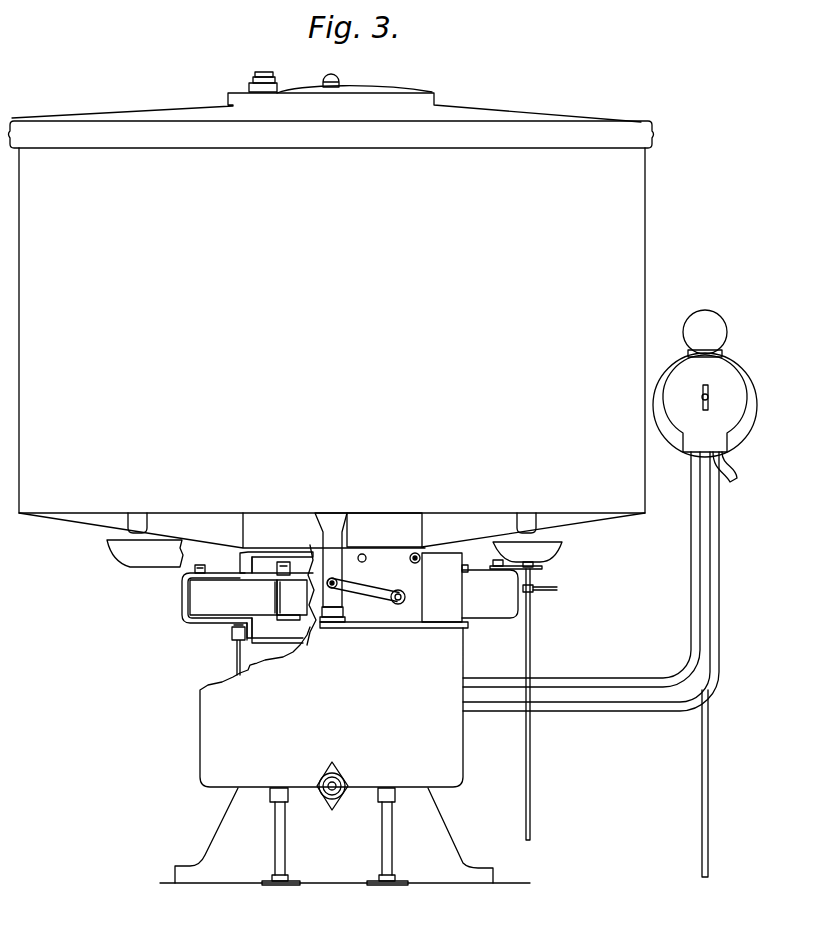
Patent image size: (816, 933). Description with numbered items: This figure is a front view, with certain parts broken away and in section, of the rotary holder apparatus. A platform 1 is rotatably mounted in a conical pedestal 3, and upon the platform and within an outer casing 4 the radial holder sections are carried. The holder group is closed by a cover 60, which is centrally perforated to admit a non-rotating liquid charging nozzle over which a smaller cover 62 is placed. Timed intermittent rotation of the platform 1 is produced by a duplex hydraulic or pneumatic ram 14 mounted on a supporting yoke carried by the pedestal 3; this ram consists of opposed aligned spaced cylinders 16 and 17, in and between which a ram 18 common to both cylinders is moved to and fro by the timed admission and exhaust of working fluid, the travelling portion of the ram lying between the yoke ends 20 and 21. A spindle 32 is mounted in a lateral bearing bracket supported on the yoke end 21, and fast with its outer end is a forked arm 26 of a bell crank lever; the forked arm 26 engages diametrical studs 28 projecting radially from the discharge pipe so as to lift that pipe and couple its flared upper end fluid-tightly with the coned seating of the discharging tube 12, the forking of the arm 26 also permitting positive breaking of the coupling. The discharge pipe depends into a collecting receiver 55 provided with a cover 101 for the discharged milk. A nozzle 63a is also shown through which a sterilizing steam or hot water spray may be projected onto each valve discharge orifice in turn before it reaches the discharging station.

The platform 1 is at (445, 532).
The conical pedestal 3 is at (450, 826).
The outer casing 4 is at (331, 334).
The discharging tube 12 is at (135, 520).
The duplex hydraulic or pneumatic ram 14 is at (307, 637).
The cylinder 16 is at (205, 598).
The cylinder 17 is at (502, 589).
The ram 18 is at (295, 598).
The yoke end 20 is at (250, 555).
The yoke end 21 is at (433, 572).
The forked arm 26 is at (375, 592).
The diametrical studs 28 is at (330, 579).
The spindle 32 is at (399, 605).
The collecting receiver 55 is at (331, 718).
The cover 60 is at (455, 115).
The smaller cover 62 is at (348, 85).
The nozzle 63a is at (537, 548).
The cover 101 is at (372, 630).